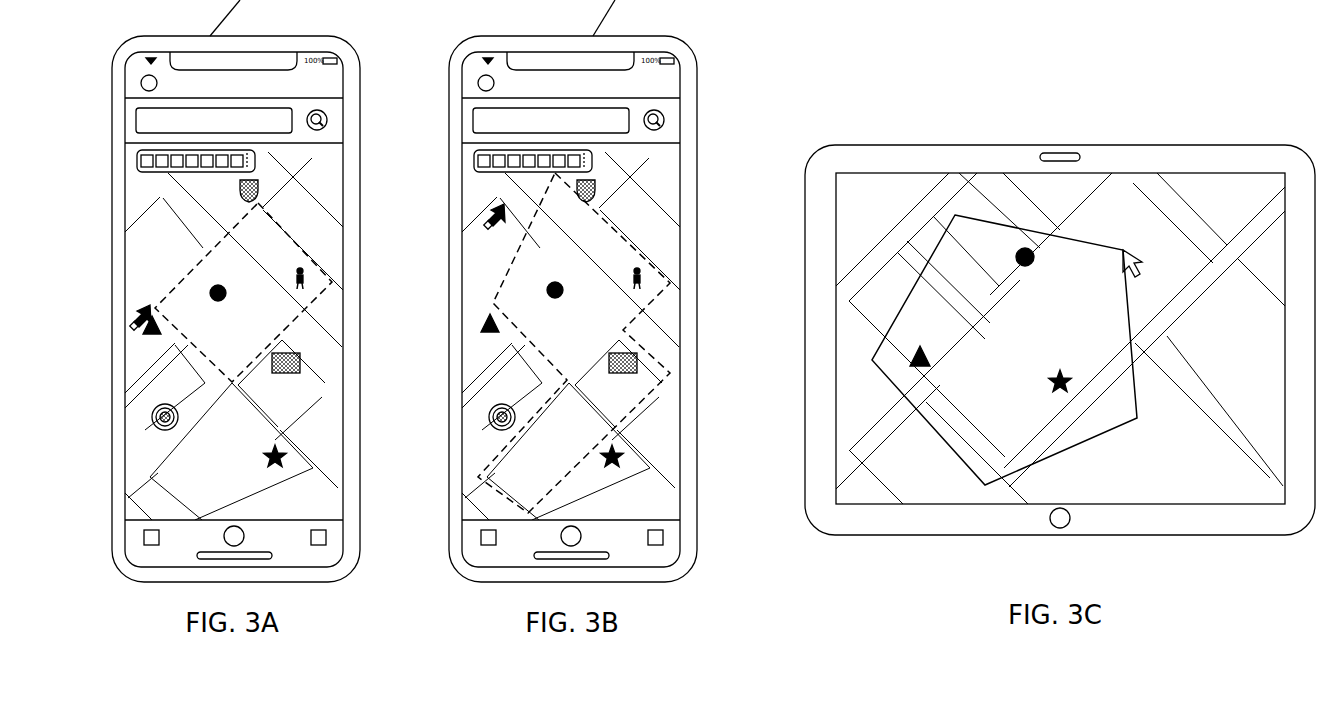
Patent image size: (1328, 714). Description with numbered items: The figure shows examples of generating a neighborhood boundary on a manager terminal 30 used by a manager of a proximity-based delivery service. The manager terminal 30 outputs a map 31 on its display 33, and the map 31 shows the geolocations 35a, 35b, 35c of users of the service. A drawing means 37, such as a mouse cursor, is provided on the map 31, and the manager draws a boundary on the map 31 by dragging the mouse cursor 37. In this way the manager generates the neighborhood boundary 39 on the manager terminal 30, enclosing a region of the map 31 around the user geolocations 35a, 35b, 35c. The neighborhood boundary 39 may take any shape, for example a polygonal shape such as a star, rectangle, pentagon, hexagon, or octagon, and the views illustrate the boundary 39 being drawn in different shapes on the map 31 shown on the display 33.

In FIG. 3C, the manager terminal 30 is at (998, 145).
In FIG. 3A, the map 31 is at (140, 440).
In FIG. 3B, the map 31 is at (478, 440).
In FIG. 3C, the map 31 is at (1208, 206).
In FIG. 3A, the display 33 is at (125, 183).
In FIG. 3B, the display 33 is at (682, 153).
In FIG. 3C, the display 33 is at (890, 173).
In FIG. 3A, the geolocation 35a is at (212, 290).
In FIG. 3B, the geolocation 35a is at (550, 290).
In FIG. 3C, the geolocation 35a is at (1024, 250).
In FIG. 3A, the geolocation 35b is at (280, 458).
In FIG. 3B, the geolocation 35b is at (619, 457).
In FIG. 3C, the geolocation 35b is at (1070, 388).
In FIG. 3A, the geolocation 35c is at (152, 332).
In FIG. 3B, the geolocation 35c is at (486, 324).
In FIG. 3C, the geolocation 35c is at (918, 355).
In FIG. 3A, the drawing means 37 is at (143, 312).
In FIG. 3B, the drawing means 37 is at (497, 212).
In FIG. 3C, the drawing means 37 is at (1122, 250).
In FIG. 3A, the neighborhood boundary 39 is at (267, 220).
In FIG. 3B, the neighborhood boundary 39 is at (615, 223).
In FIG. 3C, the neighborhood boundary 39 is at (937, 435).